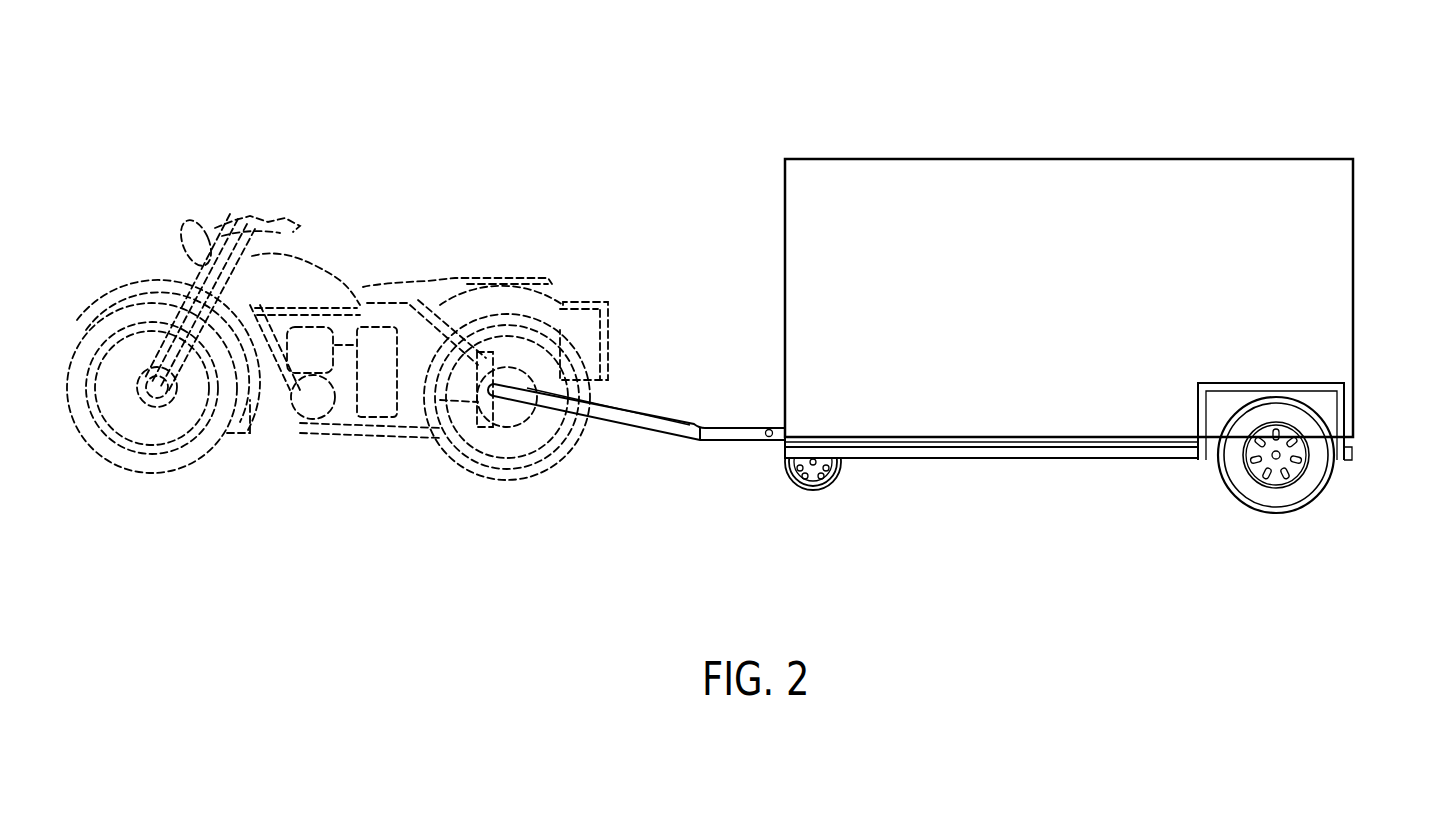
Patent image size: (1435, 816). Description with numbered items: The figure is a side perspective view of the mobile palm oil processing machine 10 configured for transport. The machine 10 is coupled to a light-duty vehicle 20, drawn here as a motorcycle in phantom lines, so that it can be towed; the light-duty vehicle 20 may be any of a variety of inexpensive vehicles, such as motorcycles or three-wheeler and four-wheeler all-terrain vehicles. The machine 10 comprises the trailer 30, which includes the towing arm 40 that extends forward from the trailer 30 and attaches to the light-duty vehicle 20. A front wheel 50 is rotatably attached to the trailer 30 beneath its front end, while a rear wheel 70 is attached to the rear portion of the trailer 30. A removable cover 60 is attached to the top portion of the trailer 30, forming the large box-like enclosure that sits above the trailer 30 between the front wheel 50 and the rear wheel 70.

The mobile palm oil processing machine 10 is at (1066, 49).
The light-duty vehicle 20 is at (320, 262).
The trailer 30 is at (1010, 460).
The towing arm 40 is at (653, 424).
The front wheel 50 is at (817, 490).
The removable cover 60 is at (996, 158).
The rear wheel 70 is at (1333, 436).